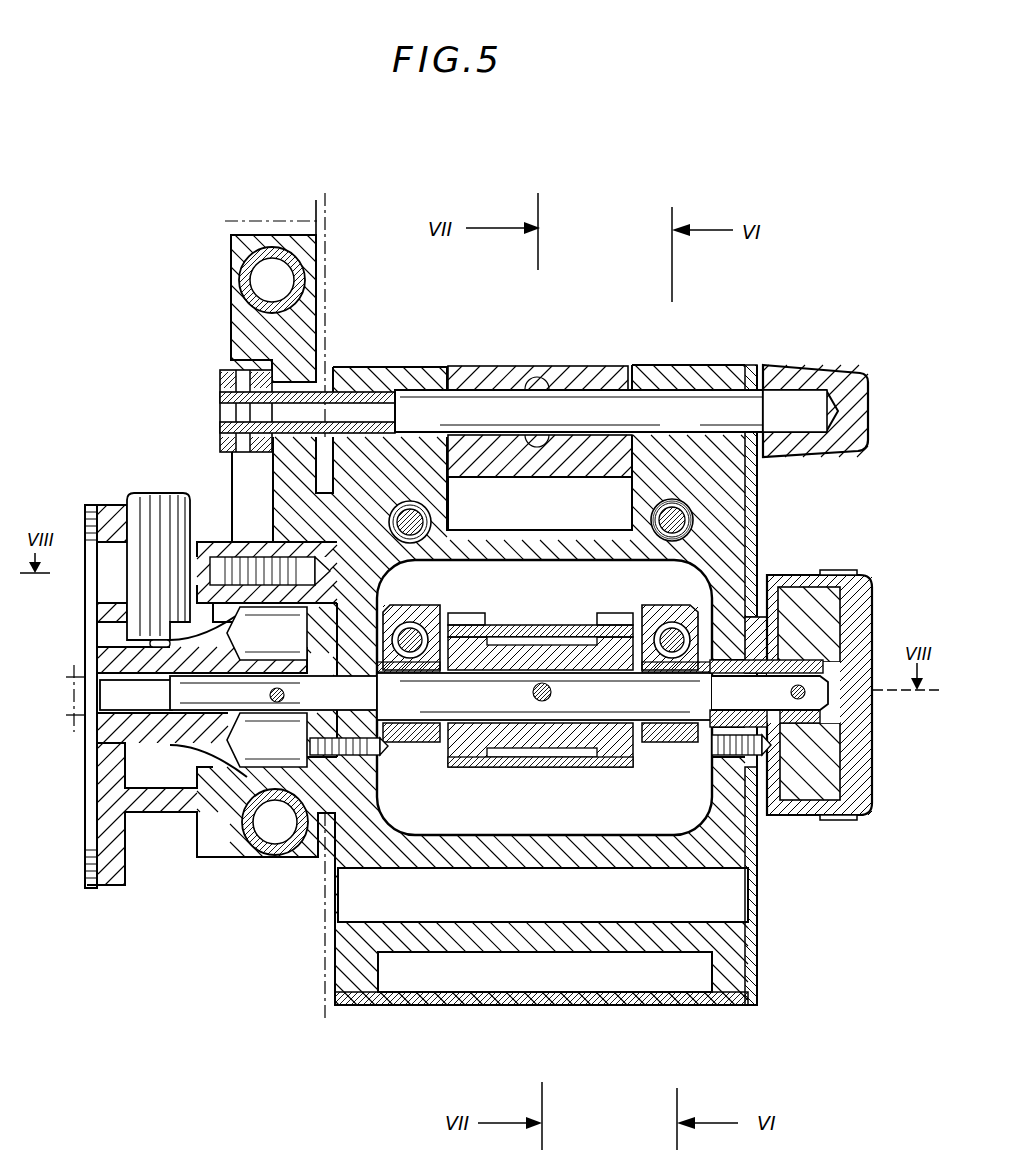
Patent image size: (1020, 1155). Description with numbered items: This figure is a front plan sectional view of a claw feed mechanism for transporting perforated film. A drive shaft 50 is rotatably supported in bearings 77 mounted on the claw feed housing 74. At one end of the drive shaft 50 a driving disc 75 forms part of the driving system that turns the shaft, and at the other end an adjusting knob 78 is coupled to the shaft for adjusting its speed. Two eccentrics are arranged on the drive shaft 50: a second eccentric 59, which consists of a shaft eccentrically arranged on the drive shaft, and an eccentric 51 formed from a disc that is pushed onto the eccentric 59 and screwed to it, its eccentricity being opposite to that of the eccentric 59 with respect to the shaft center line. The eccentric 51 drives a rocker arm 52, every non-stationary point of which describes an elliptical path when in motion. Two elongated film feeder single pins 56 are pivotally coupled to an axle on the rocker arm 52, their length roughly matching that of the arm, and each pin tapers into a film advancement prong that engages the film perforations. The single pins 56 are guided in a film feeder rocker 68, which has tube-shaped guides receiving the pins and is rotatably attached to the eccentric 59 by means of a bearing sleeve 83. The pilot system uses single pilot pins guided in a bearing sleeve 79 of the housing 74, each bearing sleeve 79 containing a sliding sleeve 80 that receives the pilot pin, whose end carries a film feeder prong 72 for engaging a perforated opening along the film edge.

The drive shaft 50 is at (792, 702).
The eccentric 51 is at (508, 740).
The rocker arm 52 is at (500, 626).
The film feeder single pins 56 is at (412, 638).
The second eccentric 59 is at (467, 712).
The film feeder rocker 68 is at (417, 740).
The film feeder prong 72 is at (425, 530).
The claw feed housing 74 is at (317, 802).
The driving disc 75 is at (150, 494).
The bearings 77 is at (377, 594).
The adjusting knob 78 is at (872, 578).
The bearing sleeve 79 is at (664, 515).
The sliding sleeve 80 is at (427, 537).
The bearing sleeve 83 is at (380, 732).